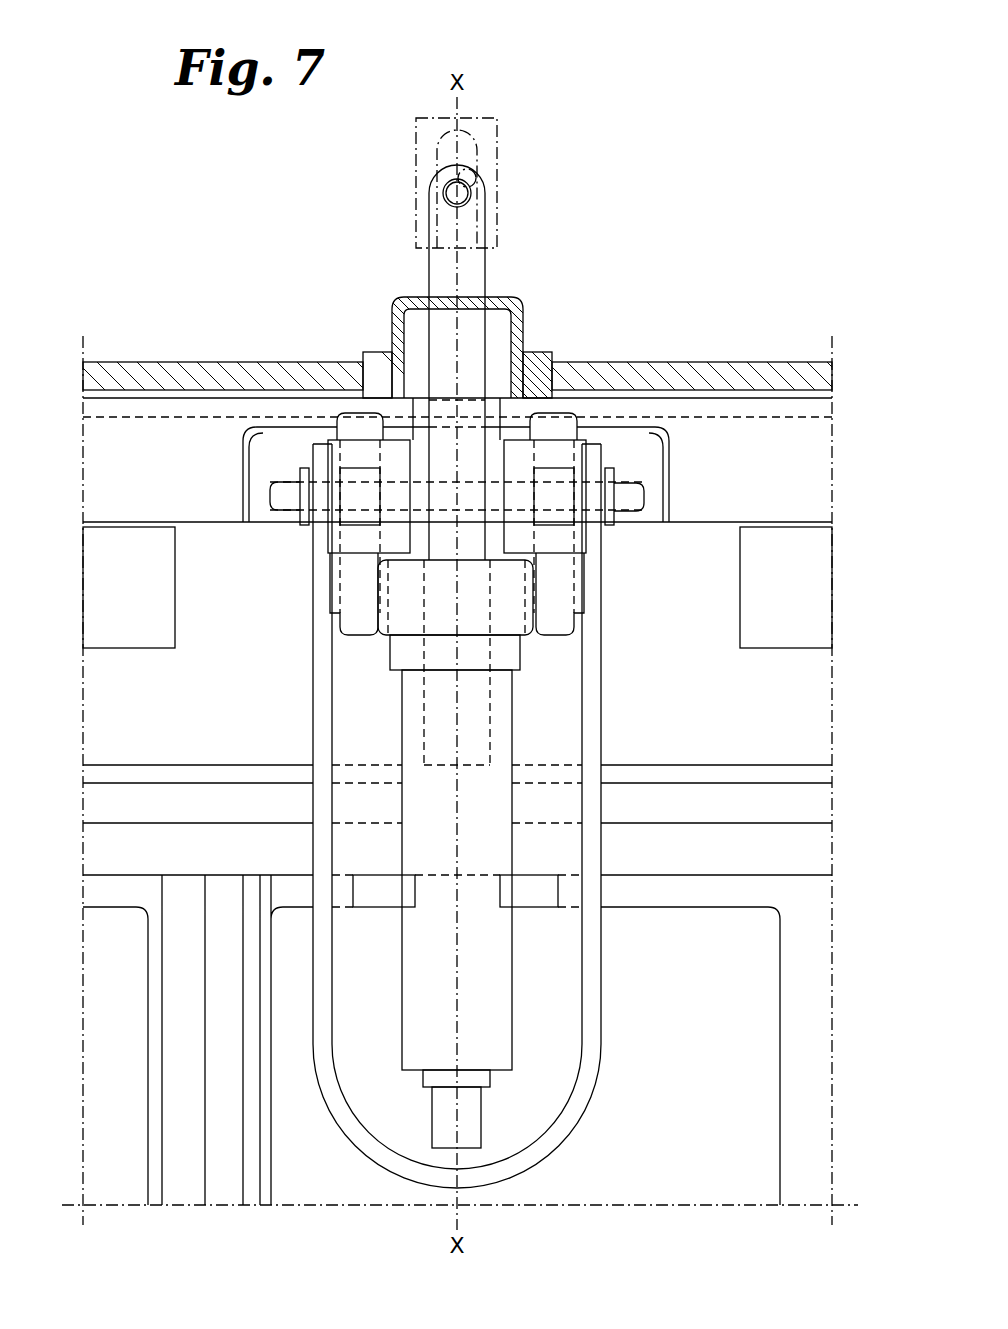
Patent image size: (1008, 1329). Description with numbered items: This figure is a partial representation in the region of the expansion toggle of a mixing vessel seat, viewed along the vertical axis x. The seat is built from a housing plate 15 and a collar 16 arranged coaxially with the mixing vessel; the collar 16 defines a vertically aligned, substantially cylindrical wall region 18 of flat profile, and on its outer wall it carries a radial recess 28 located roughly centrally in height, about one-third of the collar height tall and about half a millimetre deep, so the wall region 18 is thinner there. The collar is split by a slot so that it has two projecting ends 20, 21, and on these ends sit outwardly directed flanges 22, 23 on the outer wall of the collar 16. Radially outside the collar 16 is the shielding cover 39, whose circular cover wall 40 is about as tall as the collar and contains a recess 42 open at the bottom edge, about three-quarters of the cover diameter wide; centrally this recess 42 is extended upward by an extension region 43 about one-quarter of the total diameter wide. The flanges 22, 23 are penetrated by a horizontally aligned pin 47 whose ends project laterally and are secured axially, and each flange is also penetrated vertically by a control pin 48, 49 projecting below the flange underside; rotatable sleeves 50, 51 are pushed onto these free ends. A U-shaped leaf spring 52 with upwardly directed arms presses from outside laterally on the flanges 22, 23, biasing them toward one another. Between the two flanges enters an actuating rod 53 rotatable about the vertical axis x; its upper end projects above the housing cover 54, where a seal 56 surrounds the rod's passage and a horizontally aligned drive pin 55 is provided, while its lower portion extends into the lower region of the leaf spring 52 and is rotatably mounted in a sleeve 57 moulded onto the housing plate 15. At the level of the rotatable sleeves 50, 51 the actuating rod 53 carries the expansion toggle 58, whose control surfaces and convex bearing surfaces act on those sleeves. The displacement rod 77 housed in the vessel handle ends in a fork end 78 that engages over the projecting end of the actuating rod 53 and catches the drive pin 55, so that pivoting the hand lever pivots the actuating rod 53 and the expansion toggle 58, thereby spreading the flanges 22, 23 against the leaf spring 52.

The housing plate 15 is at (617, 777).
The collar 16 is at (160, 724).
The wall region 18 is at (790, 669).
The projecting end 20 is at (385, 737).
The projecting end 21 is at (520, 700).
The flange 22 is at (350, 453).
The flange 23 is at (557, 452).
The radial recess 28 is at (124, 550).
The shielding cover 39 is at (783, 428).
The cover wall 40 is at (717, 467).
The recess 42 is at (784, 522).
The extension region 43 is at (627, 427).
The pin 47 is at (282, 493).
The control pin 48 is at (357, 425).
The control pin 49 is at (548, 422).
The rotatable sleeve 50 is at (345, 584).
The rotatable sleeve 51 is at (558, 589).
The U-shaped leaf spring 52 is at (592, 957).
The actuating rod 53 is at (478, 262).
The housing cover 54 is at (147, 378).
The drive pin 55 is at (460, 190).
The seal 56 is at (498, 302).
The sleeve 57 is at (497, 1035).
The nut 58 is at (396, 618).
The displacement rod 77 is at (457, 125).
The fork end 78 is at (493, 165).